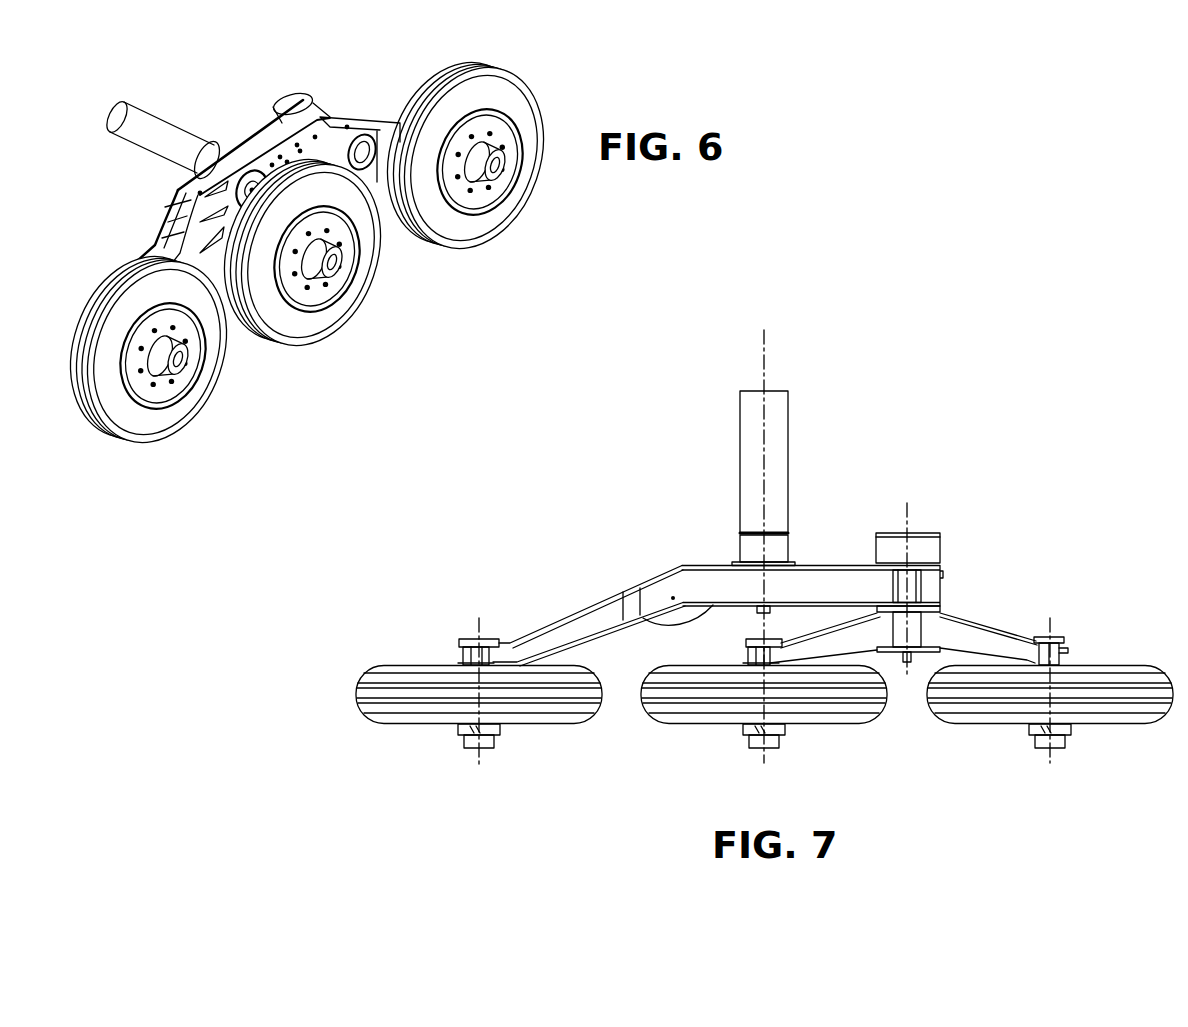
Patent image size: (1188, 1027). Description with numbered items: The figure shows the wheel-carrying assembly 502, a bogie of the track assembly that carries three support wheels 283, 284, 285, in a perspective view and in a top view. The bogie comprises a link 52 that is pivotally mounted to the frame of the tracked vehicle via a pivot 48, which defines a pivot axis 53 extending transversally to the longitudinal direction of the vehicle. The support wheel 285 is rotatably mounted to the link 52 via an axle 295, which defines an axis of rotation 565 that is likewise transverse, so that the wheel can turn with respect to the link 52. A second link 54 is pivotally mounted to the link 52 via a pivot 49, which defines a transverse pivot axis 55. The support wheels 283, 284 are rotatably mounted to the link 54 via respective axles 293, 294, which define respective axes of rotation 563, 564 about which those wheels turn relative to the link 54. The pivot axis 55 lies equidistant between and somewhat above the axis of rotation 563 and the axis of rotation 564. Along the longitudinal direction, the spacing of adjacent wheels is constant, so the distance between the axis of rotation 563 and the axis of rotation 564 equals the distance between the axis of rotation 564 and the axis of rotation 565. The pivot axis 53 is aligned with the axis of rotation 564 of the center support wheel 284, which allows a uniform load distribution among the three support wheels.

In FIG. 6, the wheel-carrying assembly 502 is at (204, 96).
In FIG. 7, the wheel-carrying assembly 502 is at (1037, 489).
In FIG. 6, the pivot 48 is at (221, 152).
In FIG. 7, the pivot 48 is at (780, 552).
In FIG. 7, the pivot axis 53 is at (764, 356).
In FIG. 6, the link 52 is at (167, 233).
In FIG. 7, the link 52 is at (655, 590).
In FIG. 6, the link 54 is at (390, 132).
In FIG. 7, the link 54 is at (1003, 643).
In FIG. 7, the pivot axis 55 is at (909, 512).
In FIG. 7, the pivot 49 is at (945, 608).
In FIG. 6, the support wheel 283 is at (480, 193).
In FIG. 7, the support wheel 283 is at (985, 727).
In FIG. 6, the support wheel 284 is at (320, 288).
In FIG. 7, the support wheel 284 is at (700, 727).
In FIG. 6, the support wheel 285 is at (162, 387).
In FIG. 7, the support wheel 285 is at (395, 727).
In FIG. 7, the axle 293 is at (1055, 731).
In FIG. 7, the axle 294 is at (769, 731).
In FIG. 7, the axle 295 is at (484, 731).
In FIG. 7, the axis of rotation 563 is at (1050, 768).
In FIG. 7, the axis of rotation 564 is at (764, 768).
In FIG. 7, the axis of rotation 565 is at (479, 768).